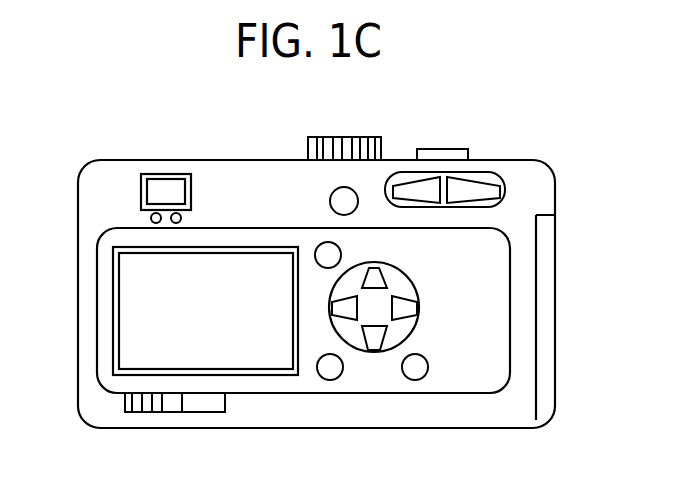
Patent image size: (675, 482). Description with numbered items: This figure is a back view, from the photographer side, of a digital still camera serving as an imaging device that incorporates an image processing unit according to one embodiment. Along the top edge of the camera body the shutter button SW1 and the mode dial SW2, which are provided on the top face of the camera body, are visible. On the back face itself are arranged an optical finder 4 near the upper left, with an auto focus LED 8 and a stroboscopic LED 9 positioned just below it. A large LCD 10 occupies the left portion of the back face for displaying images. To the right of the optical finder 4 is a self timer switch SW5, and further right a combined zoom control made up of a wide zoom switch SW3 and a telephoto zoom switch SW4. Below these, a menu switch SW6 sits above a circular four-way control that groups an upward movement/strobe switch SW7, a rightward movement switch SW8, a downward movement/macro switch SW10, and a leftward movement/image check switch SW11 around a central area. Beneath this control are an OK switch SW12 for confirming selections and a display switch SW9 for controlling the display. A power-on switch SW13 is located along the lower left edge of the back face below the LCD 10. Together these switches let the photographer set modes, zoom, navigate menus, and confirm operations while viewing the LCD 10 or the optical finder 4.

The optical finder 4 is at (163, 185).
The auto focus LED 8 is at (150, 216).
The stroboscopic LED 9 is at (182, 216).
The LCD 10 is at (125, 317).
The shutter button SW1 is at (455, 152).
The mode dial SW2 is at (333, 137).
The wide zoom switch SW3 is at (405, 185).
The telephoto zoom switch SW4 is at (490, 188).
The self timer switch SW5 is at (330, 201).
The menu switch SW6 is at (316, 258).
The upward movement/strobe switch SW7 is at (377, 278).
The rightward movement switch SW8 is at (412, 308).
The display switch SW9 is at (415, 378).
The downward movement/macro switch SW10 is at (375, 345).
The leftward movement/image check switch SW11 is at (335, 308).
The OK switch SW12 is at (327, 378).
The power-on switch SW13 is at (135, 412).